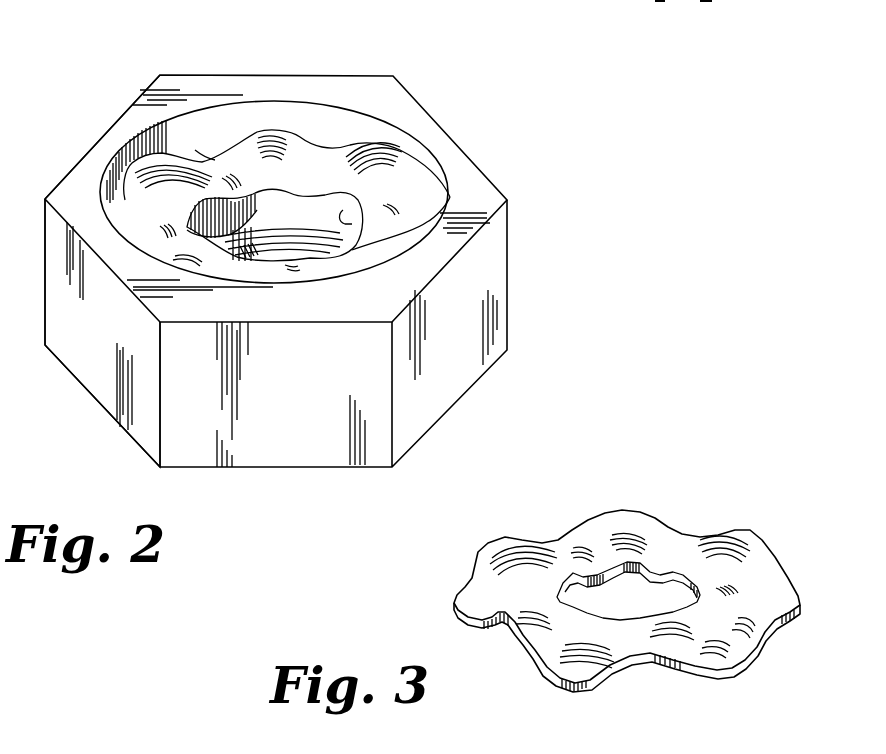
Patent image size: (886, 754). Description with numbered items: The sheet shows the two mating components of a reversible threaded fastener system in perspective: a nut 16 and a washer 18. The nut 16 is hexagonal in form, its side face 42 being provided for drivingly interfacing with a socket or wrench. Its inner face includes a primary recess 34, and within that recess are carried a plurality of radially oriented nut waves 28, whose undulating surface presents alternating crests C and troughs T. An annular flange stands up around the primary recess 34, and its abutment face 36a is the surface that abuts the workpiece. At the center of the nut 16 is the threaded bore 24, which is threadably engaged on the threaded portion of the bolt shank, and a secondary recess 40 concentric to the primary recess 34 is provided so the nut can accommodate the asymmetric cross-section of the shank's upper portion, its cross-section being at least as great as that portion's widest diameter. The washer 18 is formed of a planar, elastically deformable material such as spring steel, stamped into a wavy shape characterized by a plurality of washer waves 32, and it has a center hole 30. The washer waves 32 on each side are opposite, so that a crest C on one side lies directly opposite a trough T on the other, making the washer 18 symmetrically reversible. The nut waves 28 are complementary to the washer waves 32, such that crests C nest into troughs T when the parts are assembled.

In FIG. 2, the nut 16 is at (530, 297).
In FIG. 3, the washer 18 is at (650, 572).
In FIG. 2, the threaded bore 24 is at (290, 243).
In FIG. 2, the nut waves 28 is at (380, 153).
In FIG. 3, the center hole 30 is at (660, 574).
In FIG. 3, the washer waves 32 is at (563, 537).
In FIG. 2, the primary recess 34 is at (200, 135).
In FIG. 2, the abutment face 36a is at (125, 133).
In FIG. 2, the secondary recess 40 is at (340, 205).
In FIG. 2, the side face 42 is at (80, 340).
In FIG. 2, the crest C is at (267, 127).
In FIG. 3, the crest C is at (488, 545).
In FIG. 2, the trough T is at (218, 167).
In FIG. 3, the trough T is at (587, 553).